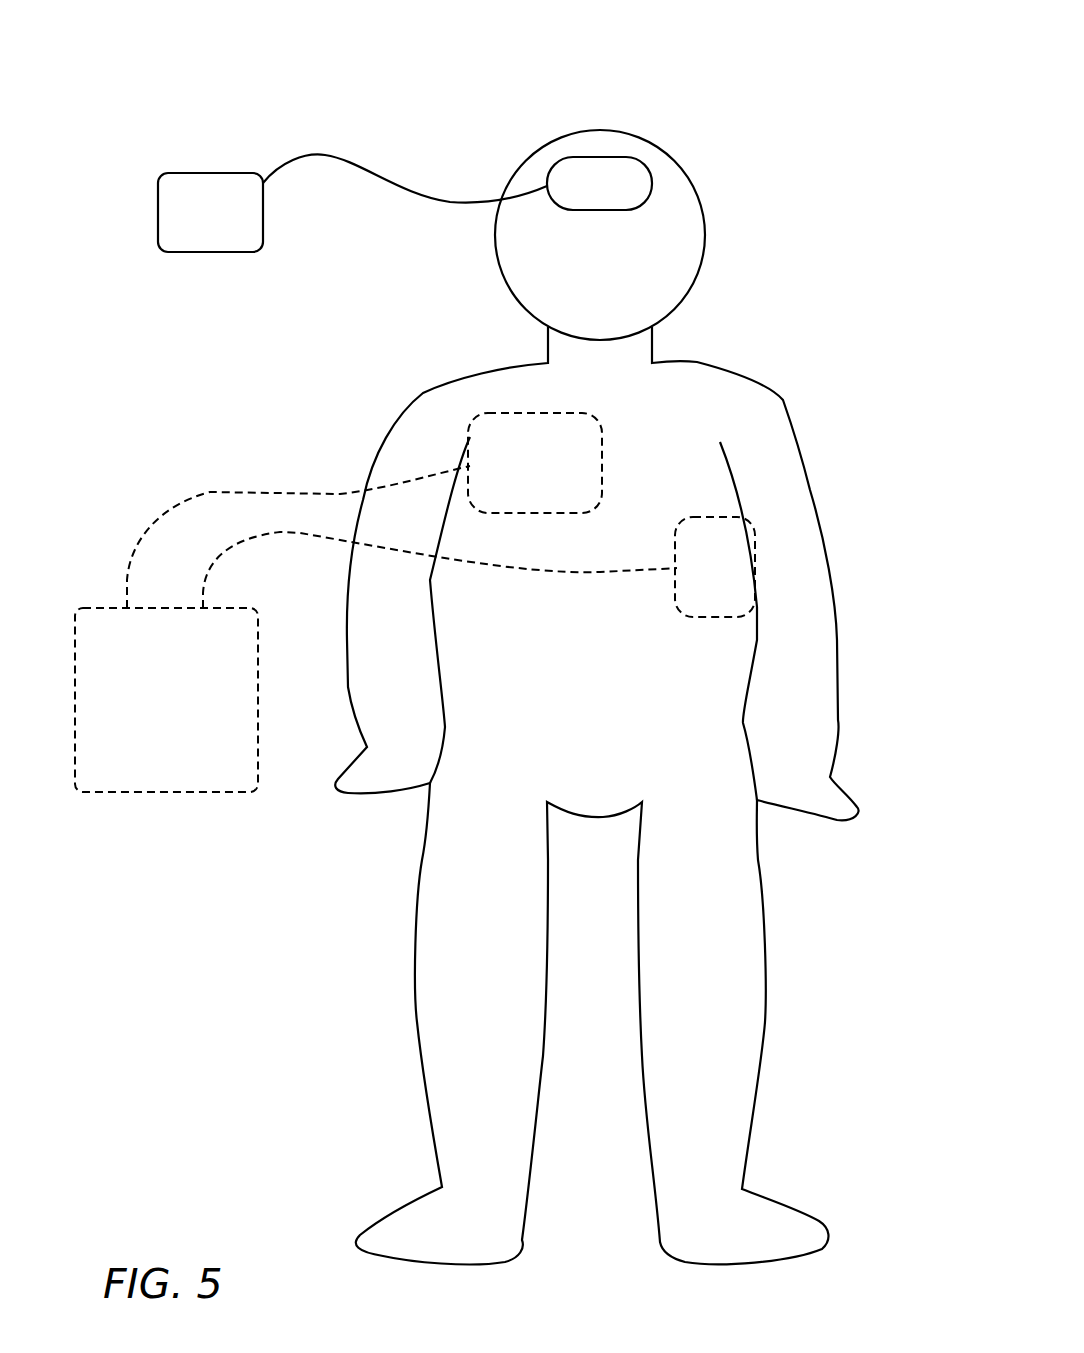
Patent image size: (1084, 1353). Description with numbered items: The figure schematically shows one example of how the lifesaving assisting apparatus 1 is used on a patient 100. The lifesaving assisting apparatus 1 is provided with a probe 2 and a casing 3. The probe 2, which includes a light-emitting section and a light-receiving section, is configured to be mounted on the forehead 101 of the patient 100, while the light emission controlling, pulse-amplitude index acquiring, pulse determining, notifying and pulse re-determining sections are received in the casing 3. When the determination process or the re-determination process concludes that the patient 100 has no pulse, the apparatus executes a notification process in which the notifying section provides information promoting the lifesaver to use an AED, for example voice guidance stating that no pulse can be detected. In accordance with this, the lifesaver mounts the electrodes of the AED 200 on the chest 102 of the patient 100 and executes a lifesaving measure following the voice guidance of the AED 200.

The lifesaving assisting apparatus 1 is at (422, 147).
The probe 2 is at (635, 177).
The casing 3 is at (185, 190).
The patient 100 is at (634, 633).
The forehead 101 is at (593, 145).
The chest 102 is at (687, 492).
The AED 200 is at (205, 743).